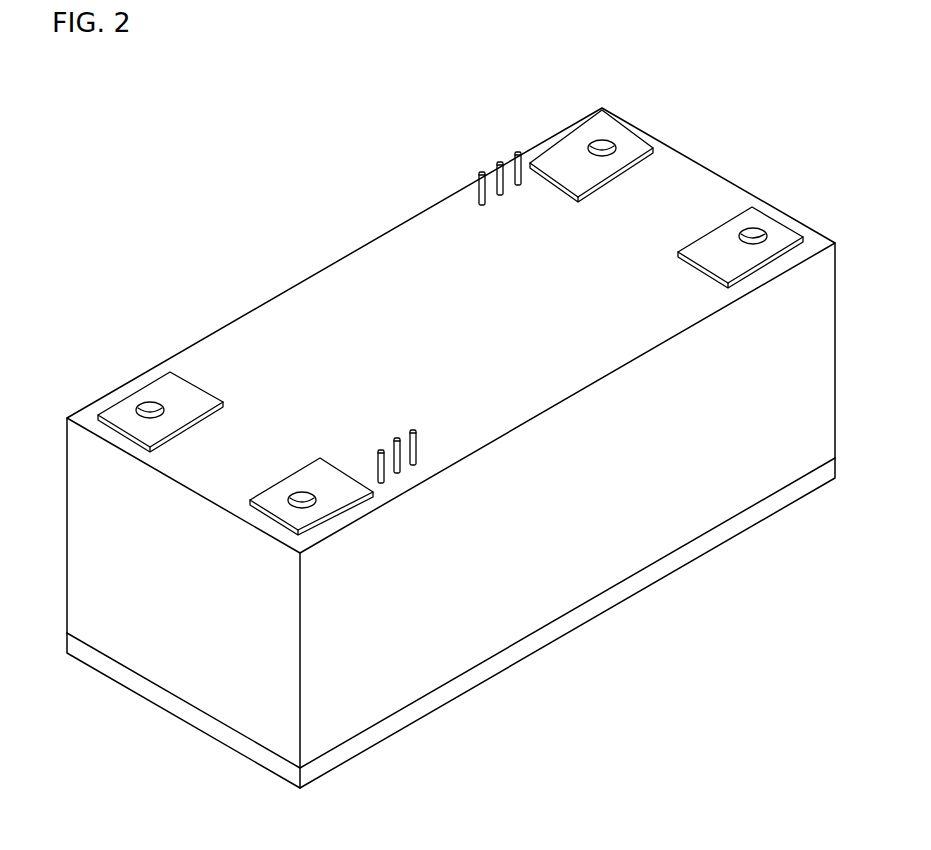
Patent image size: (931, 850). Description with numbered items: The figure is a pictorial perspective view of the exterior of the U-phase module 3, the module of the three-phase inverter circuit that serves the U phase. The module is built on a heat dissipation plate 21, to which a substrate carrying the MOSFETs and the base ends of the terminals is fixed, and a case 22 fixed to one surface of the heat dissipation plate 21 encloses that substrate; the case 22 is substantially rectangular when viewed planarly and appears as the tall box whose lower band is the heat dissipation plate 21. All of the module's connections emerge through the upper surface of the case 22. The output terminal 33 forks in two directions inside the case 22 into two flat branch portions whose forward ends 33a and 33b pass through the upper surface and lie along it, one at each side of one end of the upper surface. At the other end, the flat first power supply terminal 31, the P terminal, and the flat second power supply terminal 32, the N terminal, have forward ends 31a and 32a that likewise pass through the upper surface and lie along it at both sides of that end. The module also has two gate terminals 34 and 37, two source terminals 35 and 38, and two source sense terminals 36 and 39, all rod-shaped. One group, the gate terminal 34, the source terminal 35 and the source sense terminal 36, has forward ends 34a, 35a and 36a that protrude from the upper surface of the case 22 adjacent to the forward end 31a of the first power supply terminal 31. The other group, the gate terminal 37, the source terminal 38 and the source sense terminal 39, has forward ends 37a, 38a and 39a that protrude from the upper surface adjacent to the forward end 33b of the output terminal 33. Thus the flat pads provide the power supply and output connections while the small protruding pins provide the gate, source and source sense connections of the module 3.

The U-phase module 3 is at (451, 448).
The heat dissipation plate 21 is at (652, 575).
The case 22 is at (370, 268).
The first power supply terminal 31 is at (626, 128).
The forward end of first power supply terminal 31a is at (630, 152).
The second power supply terminal 32 is at (747, 214).
The forward end of second power supply terminal 32a is at (725, 237).
The output terminal 33 is at (225, 428).
The forward end of output terminal branch portion 33a is at (118, 410).
The forward end of output terminal branch portion 33b is at (270, 498).
The gate terminal 34 is at (544, 136).
The forward end of gate terminal 34a is at (518, 152).
The source terminal 35 is at (512, 127).
The forward end of source terminal 35a is at (498, 162).
The source sense terminal 36 is at (459, 118).
The forward end of source sense terminal 36a is at (482, 172).
The gate terminal 37 is at (364, 402).
The forward end of gate terminal 37a is at (381, 450).
The source terminal 38 is at (410, 412).
The forward end of source terminal 38a is at (397, 438).
The source sense terminal 39 is at (454, 424).
The forward end of source sense terminal 39a is at (413, 430).